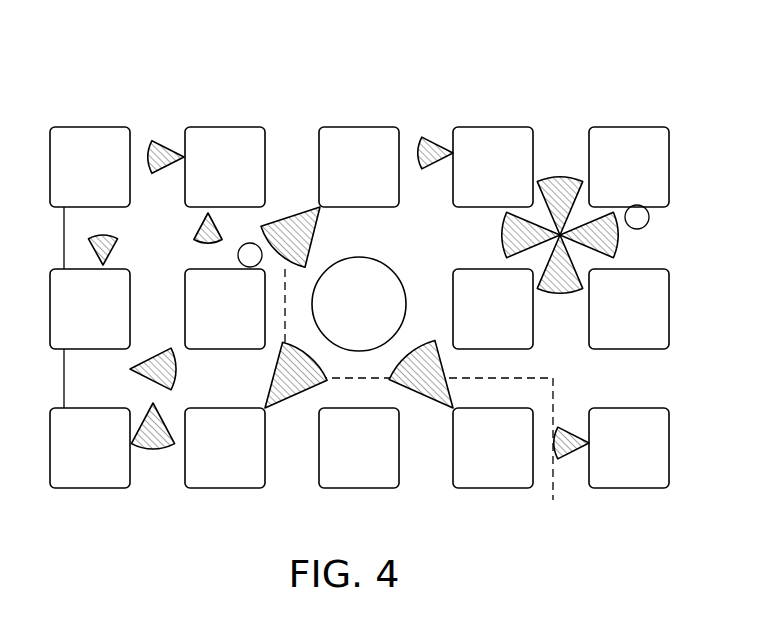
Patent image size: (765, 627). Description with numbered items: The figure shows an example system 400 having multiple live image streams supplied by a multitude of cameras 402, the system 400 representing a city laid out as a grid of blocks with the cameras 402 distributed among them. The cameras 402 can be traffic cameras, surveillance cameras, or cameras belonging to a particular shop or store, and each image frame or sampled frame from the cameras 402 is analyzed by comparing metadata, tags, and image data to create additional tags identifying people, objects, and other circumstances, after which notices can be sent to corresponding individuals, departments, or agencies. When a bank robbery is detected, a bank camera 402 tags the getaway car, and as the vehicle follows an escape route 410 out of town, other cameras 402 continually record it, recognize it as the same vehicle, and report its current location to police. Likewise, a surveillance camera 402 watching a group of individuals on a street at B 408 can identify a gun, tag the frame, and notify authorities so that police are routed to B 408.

The system 400 is at (218, 83).
The cameras 402 is at (172, 140).
The location B 408 is at (650, 219).
The escape route 410 is at (285, 296).